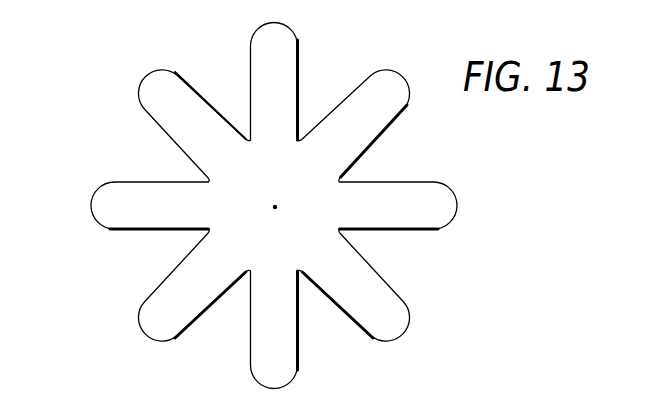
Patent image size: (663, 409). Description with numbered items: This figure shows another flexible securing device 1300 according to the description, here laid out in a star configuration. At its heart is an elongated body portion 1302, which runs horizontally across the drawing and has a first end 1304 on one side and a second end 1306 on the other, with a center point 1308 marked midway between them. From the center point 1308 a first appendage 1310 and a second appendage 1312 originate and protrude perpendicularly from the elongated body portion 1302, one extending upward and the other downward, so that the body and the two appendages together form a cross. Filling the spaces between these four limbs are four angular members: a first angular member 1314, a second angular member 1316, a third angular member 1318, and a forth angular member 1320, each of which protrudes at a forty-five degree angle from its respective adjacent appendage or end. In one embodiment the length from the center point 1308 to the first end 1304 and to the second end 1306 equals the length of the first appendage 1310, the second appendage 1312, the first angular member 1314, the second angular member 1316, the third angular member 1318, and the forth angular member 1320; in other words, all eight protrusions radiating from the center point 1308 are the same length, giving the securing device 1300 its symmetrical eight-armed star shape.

The securing device 1300 is at (378, 40).
The elongated body portion 1302 is at (341, 181).
The first end 1304 is at (106, 209).
The second end 1306 is at (424, 207).
The center point 1308 is at (275, 207).
The first appendage 1310 is at (274, 47).
The second appendage 1312 is at (280, 370).
The first angular member 1314 is at (173, 97).
The second angular member 1316 is at (392, 319).
The third angular member 1318 is at (390, 90).
The forth angular member 1320 is at (160, 325).